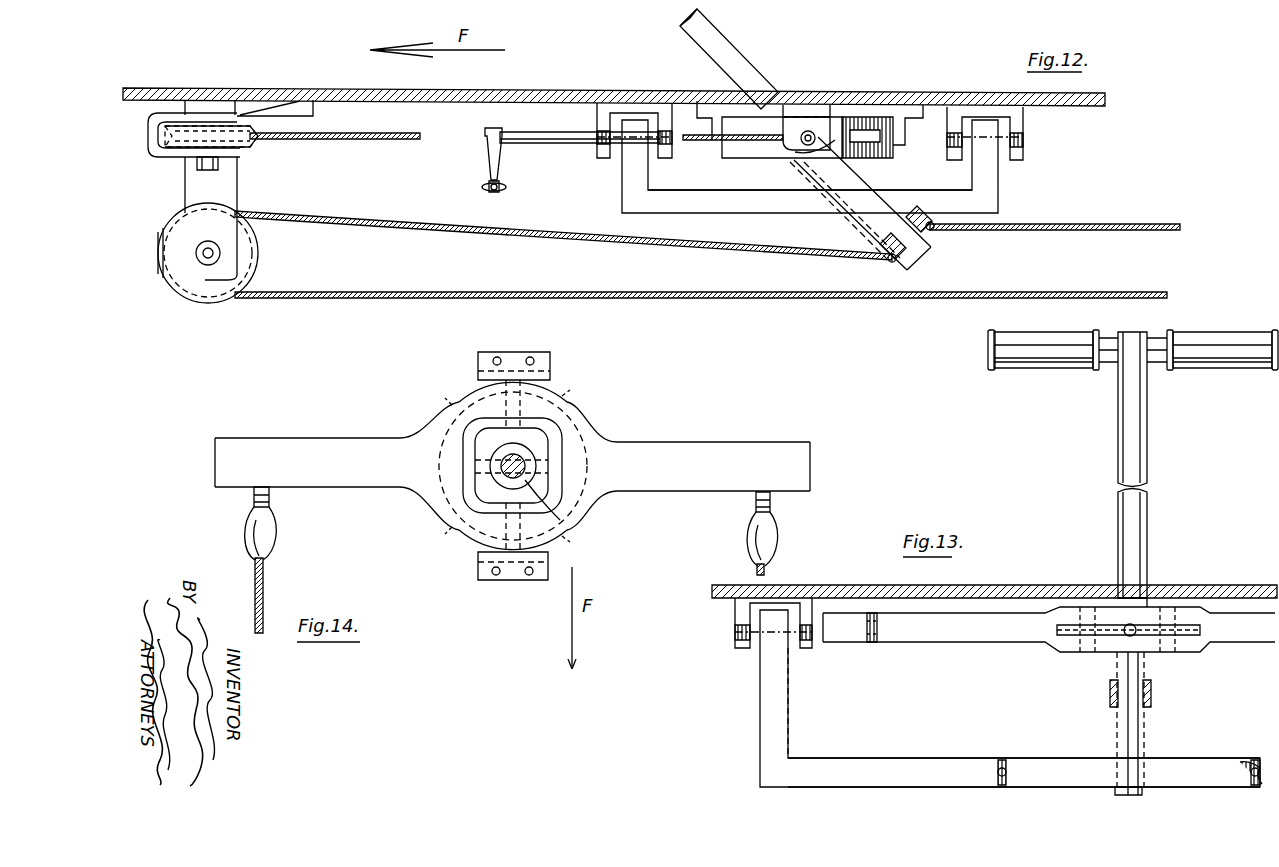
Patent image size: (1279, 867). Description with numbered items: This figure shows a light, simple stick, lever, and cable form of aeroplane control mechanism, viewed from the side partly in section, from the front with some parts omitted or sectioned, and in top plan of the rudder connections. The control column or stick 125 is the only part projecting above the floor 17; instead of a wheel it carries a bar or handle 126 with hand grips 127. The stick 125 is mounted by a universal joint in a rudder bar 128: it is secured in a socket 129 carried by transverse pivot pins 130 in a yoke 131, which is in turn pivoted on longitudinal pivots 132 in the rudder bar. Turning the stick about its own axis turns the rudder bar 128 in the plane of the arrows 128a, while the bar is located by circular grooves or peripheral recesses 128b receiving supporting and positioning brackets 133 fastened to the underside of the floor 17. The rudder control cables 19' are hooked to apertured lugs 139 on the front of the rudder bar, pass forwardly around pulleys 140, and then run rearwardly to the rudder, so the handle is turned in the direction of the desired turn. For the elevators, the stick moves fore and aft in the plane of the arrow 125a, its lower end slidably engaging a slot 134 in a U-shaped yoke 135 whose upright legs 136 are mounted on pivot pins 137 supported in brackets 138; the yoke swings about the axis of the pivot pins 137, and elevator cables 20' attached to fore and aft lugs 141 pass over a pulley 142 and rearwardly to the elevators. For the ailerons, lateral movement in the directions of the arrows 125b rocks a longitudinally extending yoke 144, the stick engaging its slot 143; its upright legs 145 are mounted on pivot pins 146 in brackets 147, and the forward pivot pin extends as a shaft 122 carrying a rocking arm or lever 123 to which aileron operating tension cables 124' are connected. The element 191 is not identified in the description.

In FIG. 12, the floor 17 is at (586, 92).
In FIG. 13, the floor 17 is at (1202, 586).
In FIG. 14, the rudder control cables 19' is at (526, 570).
In FIG. 12, the elevator cables 20' is at (707, 248).
In FIG. 12, the shaft 122 is at (540, 148).
In FIG. 12, the rocking arm or lever 123 is at (486, 160).
In FIG. 12, the aileron operating tension cables 124' is at (516, 194).
In FIG. 12, the control column or stick 125 is at (710, 52).
In FIG. 14, the control column or stick 125 is at (525, 455).
In FIG. 13, the control column or stick 125 is at (1118, 398).
In FIG. 12, the arrow indicating fore and aft movement 125a is at (795, 36).
In FIG. 13, the arrows indicating lateral movement 125b is at (1100, 447).
In FIG. 13, the bar or handle 126 is at (1158, 362).
In FIG. 13, the hand grips 127 is at (1030, 338).
In FIG. 14, the rudder bar 128 is at (512, 465).
In FIG. 13, the rudder bar 128 is at (1049, 629).
In FIG. 14, the arrows indicating rudder bar movement 128a is at (306, 385).
In FIG. 14, the circular grooves or peripheral recesses 128b is at (460, 400).
In FIG. 14, the socket 129 is at (562, 522).
In FIG. 14, the transverse pivot pins 130 is at (548, 463).
In FIG. 14, the yoke 131 is at (540, 478).
In FIG. 14, the longitudinal pivots 132 is at (468, 528).
In FIG. 13, the longitudinal pivots 132 is at (1126, 635).
In FIG. 12, the supporting and positioning brackets 133 is at (712, 118).
In FIG. 13, the slot 134 is at (1078, 765).
In FIG. 12, the U-shaped yoke 135 is at (932, 238).
In FIG. 13, the U-shaped yoke 135 is at (890, 772).
In FIG. 13, the upright legs 136 is at (778, 705).
In FIG. 12, the pivot pins 137 is at (800, 158).
In FIG. 13, the pivot pins 137 is at (752, 646).
In FIG. 12, the brackets 138 is at (835, 118).
In FIG. 13, the brackets 138 is at (736, 615).
In FIG. 14, the apertured lugs 139 is at (252, 492).
In FIG. 13, the apertured lugs 139 is at (878, 638).
In FIG. 12, the pulleys 140 is at (248, 150).
In FIG. 12, the fore and aft lugs 141 is at (930, 220).
In FIG. 13, the fore and aft lugs 141 is at (998, 768).
In FIG. 12, the pulley 142 is at (250, 258).
In FIG. 12, the slot 143 is at (760, 218).
In FIG. 12, the longitudinally extending yoke 144 is at (810, 200).
In FIG. 13, the longitudinally extending yoke 144 is at (1148, 700).
In FIG. 12, the upright legs 145 is at (632, 176).
In FIG. 12, the pivot pins 146 is at (612, 130).
In FIG. 12, the brackets 147 is at (600, 150).
In FIG. 12, the belt end 191 is at (390, 140).